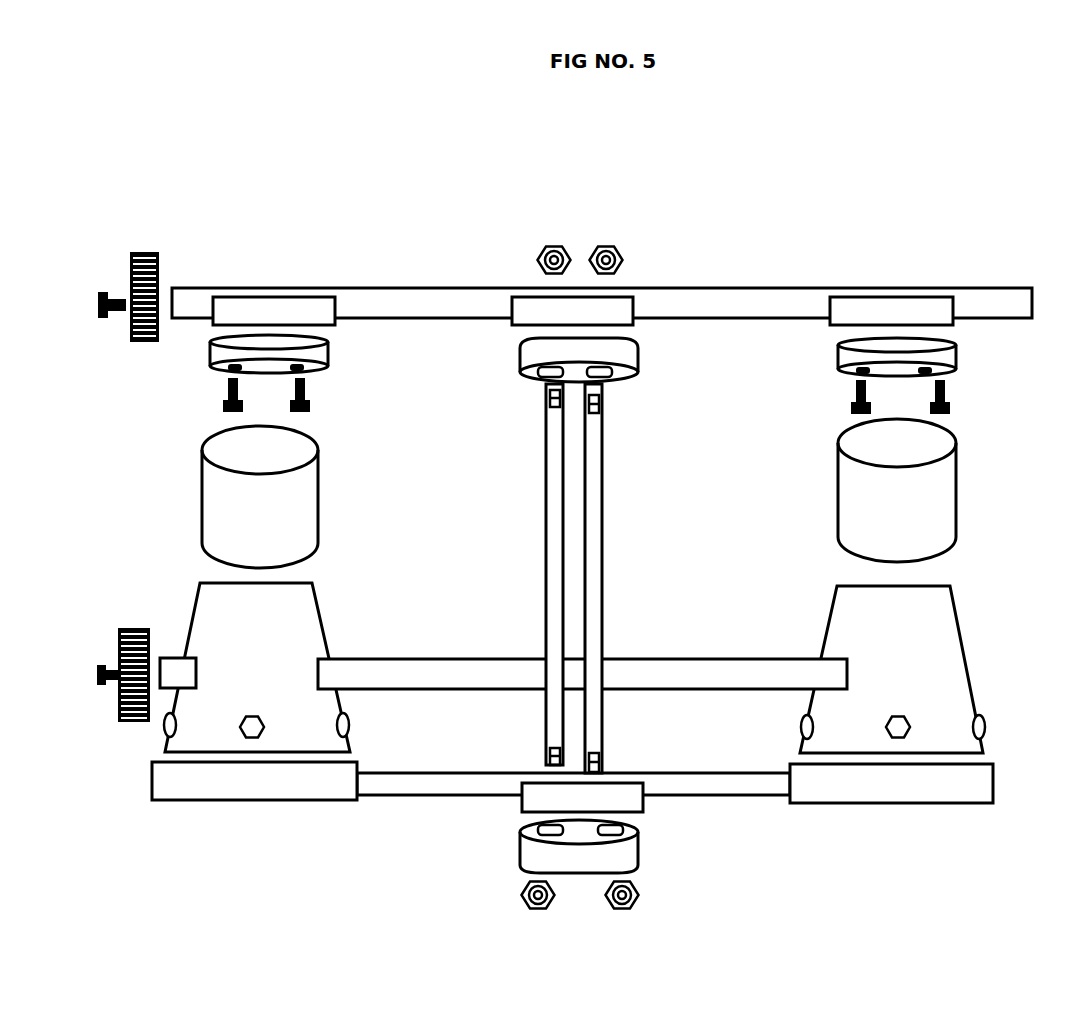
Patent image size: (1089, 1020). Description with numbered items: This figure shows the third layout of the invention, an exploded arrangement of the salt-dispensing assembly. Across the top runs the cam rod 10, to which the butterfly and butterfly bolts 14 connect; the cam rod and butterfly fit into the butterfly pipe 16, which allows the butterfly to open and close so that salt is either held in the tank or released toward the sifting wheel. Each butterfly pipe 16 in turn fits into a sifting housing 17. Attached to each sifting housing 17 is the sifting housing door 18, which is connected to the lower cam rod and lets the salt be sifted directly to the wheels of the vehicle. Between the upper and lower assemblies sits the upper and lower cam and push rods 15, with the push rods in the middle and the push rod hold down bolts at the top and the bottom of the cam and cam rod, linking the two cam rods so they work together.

The cam rod 10 is at (280, 290).
The butterfly and butterfly bolts 14 is at (232, 350).
The upper and lower cam and push rods 15 is at (620, 357).
The butterfly pipe 16 is at (228, 536).
The sifting housing 17 is at (220, 622).
The sifting housing door 18 is at (228, 774).